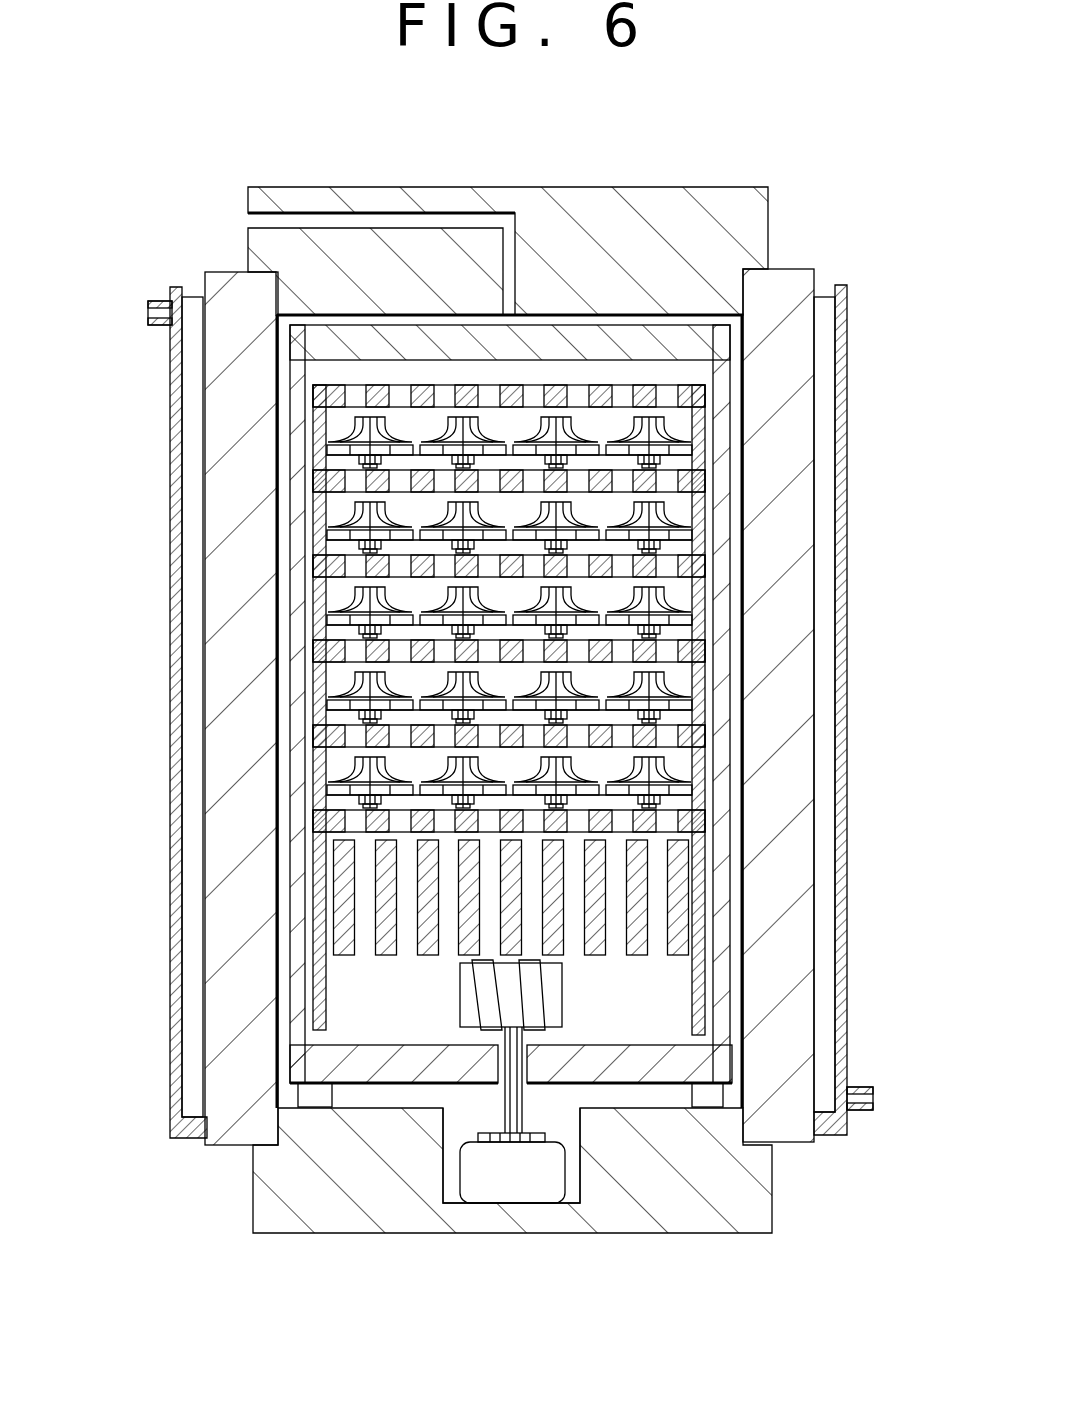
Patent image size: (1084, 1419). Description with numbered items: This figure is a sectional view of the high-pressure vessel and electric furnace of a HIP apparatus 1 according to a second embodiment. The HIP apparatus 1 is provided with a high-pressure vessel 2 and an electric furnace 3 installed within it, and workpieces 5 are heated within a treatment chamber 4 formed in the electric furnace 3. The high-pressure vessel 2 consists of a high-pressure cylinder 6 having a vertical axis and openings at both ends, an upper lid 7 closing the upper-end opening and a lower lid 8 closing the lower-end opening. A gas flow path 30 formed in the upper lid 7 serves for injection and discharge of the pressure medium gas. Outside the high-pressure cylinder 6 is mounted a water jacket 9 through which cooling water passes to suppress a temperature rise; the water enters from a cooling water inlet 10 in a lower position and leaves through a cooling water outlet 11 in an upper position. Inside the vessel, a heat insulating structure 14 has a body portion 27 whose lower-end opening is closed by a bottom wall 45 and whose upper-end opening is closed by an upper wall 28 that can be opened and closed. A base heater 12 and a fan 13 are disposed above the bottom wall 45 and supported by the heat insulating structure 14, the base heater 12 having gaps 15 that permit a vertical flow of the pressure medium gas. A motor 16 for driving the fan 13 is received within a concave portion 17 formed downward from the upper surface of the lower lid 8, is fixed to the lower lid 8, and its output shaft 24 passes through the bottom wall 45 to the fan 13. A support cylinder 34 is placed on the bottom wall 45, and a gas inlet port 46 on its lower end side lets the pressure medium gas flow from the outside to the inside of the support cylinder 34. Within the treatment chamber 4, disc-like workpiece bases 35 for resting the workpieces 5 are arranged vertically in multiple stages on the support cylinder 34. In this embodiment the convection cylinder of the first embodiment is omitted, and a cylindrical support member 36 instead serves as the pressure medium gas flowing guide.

The HIP apparatus 1 is at (762, 150).
The high-pressure vessel 2 is at (808, 260).
The electric furnace 3 is at (571, 312).
The treatment chamber 4 is at (444, 369).
The workpieces 5 is at (670, 600).
The high-pressure cylinder 6 is at (790, 333).
The upper lid 7 is at (715, 187).
The lower lid 8 is at (752, 1215).
The water jacket 9 is at (848, 372).
The cooling water inlet 10 is at (860, 1112).
The cooling water outlet 11 is at (160, 300).
The base heater 12 is at (677, 878).
The fan 13 is at (570, 995).
The heat insulating structure 14 is at (647, 331).
The gaps 15 is at (407, 949).
The motor 16 is at (482, 1190).
The concave portion 17 is at (531, 1190).
The output shaft 24 is at (630, 1068).
The body portion 27 is at (720, 697).
The upper wall 28 is at (379, 343).
The gas flow path 30 is at (297, 210).
The support cylinder 34 is at (322, 908).
The workpiece bases 35 is at (322, 394).
The cylindrical support member 36 is at (322, 527).
The bottom wall 45 is at (590, 1105).
The gas inlet port 46 is at (342, 1033).